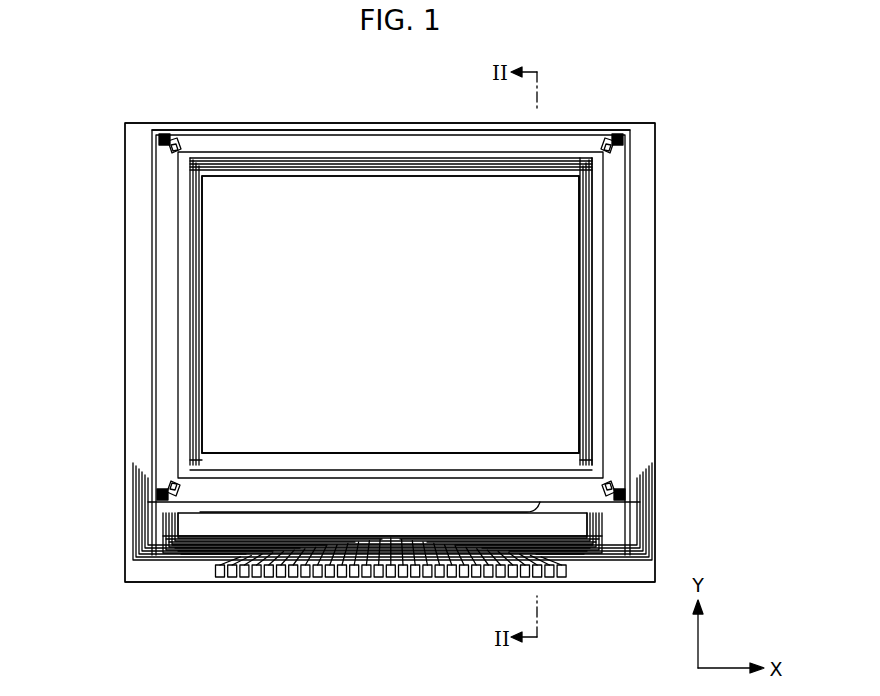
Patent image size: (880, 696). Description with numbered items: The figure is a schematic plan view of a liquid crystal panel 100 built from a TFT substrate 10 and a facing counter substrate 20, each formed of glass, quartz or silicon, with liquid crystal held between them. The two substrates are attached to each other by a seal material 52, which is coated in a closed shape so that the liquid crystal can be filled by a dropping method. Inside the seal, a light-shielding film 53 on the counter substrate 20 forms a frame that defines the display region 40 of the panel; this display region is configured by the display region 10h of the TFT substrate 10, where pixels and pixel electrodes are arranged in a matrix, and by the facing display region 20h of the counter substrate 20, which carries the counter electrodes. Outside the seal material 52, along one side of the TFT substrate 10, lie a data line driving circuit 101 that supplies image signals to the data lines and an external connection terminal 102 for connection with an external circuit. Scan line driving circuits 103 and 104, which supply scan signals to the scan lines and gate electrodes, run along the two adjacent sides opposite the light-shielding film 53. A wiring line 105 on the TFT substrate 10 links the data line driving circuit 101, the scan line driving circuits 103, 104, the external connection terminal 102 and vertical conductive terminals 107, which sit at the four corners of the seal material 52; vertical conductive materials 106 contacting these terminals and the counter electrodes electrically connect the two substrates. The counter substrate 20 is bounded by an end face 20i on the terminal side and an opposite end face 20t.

The liquid crystal panel 100 is at (606, 80).
The TFT substrate 10 is at (242, 123).
The counter substrate 20 is at (296, 130).
The end face 20t is at (433, 122).
The end face 20i is at (590, 522).
The seal material 52 is at (618, 261).
The wiring line 105 is at (360, 165).
The scan line driving circuit 104 is at (590, 316).
The scan line driving circuit 103 is at (202, 232).
The display region 40 is at (232, 292).
The display region 10h is at (102, 314).
The display region 20h is at (290, 314).
The light-shielding film 53 is at (232, 462).
The data line driving circuit 101 is at (200, 524).
The external connection terminal 102 is at (362, 578).
The vertical conductive material 106 is at (160, 139).
The vertical conductive terminal 107 is at (170, 150).